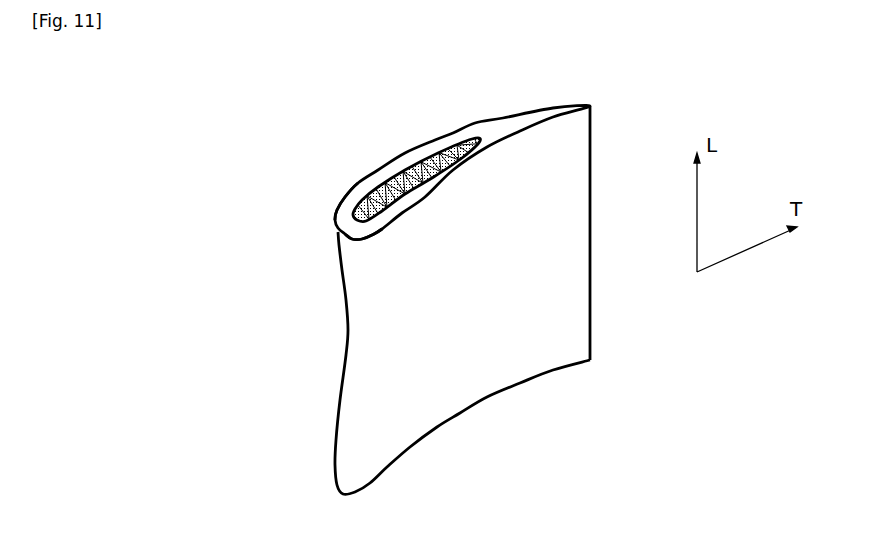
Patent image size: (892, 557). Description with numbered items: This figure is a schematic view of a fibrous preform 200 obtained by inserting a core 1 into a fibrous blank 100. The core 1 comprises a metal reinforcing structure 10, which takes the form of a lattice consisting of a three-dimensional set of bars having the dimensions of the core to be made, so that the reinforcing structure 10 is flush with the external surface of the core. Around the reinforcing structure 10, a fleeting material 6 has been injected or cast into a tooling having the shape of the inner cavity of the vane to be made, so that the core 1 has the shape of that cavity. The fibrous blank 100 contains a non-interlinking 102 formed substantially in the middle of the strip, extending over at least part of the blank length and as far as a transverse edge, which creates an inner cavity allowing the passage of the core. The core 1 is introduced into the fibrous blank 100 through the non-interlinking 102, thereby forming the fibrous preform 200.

The core 1 is at (403, 170).
The fleeting material 6 is at (373, 178).
The reinforcing structure 10 is at (377, 222).
The fibrous blank 100 is at (567, 160).
The non-interlinking 102 is at (345, 200).
The fibrous preform 200 is at (283, 442).